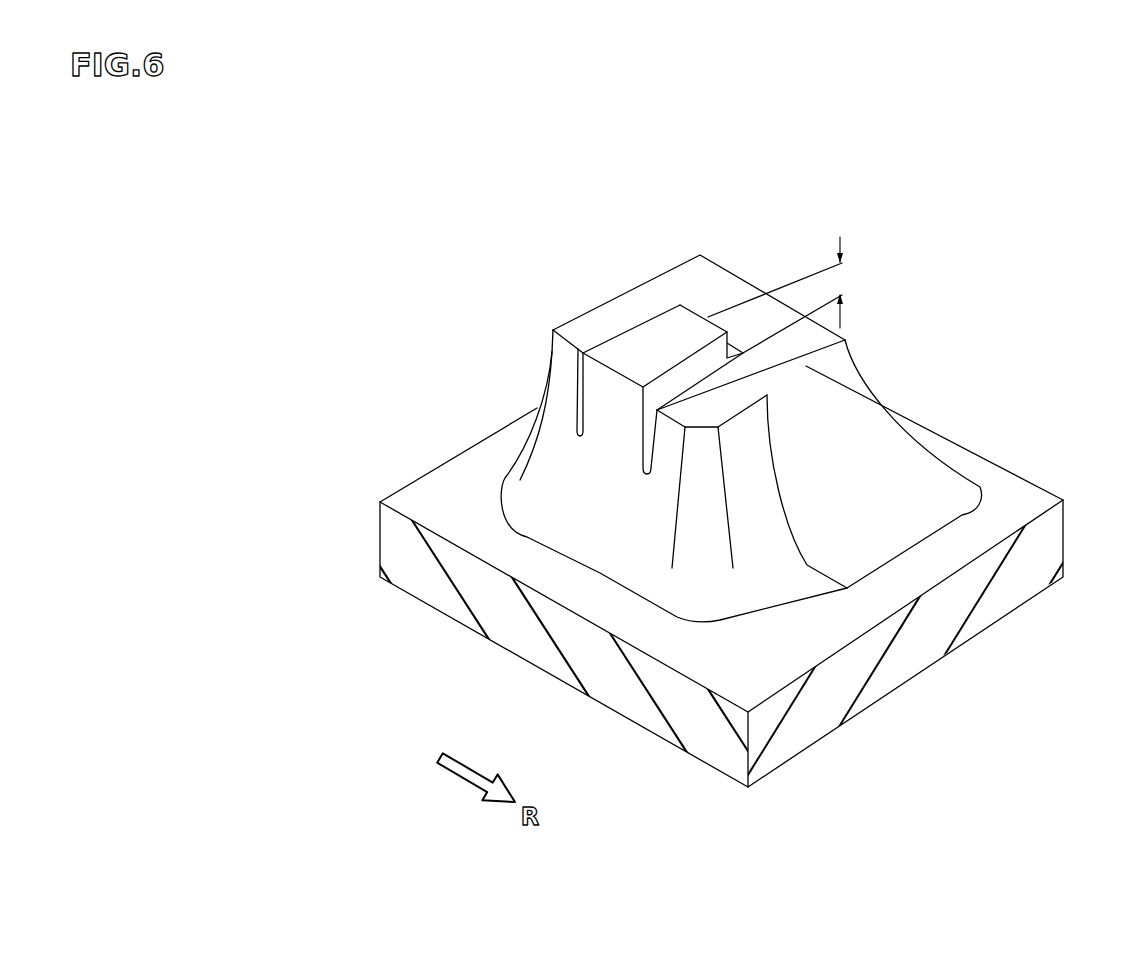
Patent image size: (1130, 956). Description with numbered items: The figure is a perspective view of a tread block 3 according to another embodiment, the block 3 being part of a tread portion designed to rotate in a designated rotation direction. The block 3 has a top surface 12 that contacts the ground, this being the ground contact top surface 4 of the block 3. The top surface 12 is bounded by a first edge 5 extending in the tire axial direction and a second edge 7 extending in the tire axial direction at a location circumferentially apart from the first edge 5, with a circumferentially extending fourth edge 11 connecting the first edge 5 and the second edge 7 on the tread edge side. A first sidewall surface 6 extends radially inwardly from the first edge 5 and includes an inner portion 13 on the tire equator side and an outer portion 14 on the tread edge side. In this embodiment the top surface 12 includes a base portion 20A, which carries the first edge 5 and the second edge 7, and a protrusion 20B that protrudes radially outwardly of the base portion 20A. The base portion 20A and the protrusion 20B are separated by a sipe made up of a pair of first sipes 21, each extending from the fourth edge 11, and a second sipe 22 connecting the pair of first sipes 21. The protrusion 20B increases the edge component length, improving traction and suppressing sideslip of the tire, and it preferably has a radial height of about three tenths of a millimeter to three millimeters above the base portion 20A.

The block 3 is at (907, 212).
The ground contact top surface 4 is at (600, 325).
The first edge 5 is at (862, 388).
The first sidewall surface 6 is at (1042, 707).
The second edge 7 is at (628, 291).
The fourth edge 11 is at (565, 358).
The top surface 12 is at (777, 175).
The inner portion 13 is at (900, 510).
The outer portion 14 is at (767, 547).
The base portion 20A is at (673, 290).
The protrusion 20B is at (677, 333).
The first sipes 21 is at (580, 400).
The second sipe 22 is at (755, 284).